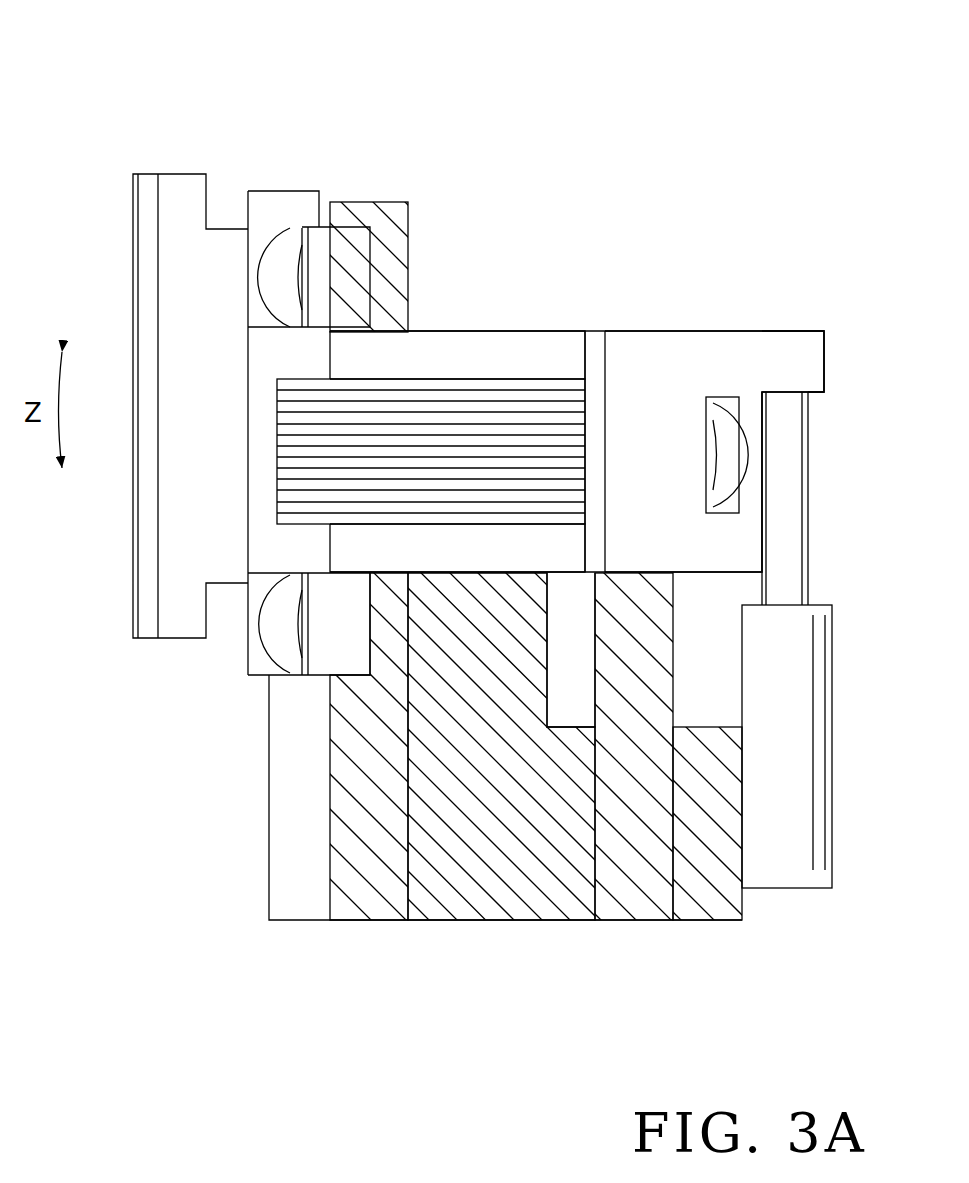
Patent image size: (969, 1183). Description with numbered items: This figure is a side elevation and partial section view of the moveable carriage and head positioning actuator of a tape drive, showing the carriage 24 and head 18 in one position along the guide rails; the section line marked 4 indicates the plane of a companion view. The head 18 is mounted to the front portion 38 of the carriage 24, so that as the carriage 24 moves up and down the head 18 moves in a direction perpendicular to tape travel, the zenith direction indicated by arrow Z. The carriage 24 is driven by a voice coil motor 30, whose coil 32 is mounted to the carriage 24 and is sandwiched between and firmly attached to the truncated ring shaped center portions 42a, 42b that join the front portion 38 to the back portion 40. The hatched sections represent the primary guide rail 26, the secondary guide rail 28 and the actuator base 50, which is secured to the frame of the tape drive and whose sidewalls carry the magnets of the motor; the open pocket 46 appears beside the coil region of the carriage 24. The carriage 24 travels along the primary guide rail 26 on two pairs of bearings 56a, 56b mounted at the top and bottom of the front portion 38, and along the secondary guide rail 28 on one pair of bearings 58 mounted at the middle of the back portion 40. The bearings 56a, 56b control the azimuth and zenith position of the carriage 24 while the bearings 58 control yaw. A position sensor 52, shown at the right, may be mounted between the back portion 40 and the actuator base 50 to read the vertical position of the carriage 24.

The section line 4- 4 is at (246, 80).
The head 18 is at (133, 258).
The moveable carriage 24 is at (677, 327).
The primary guide rail 26 is at (385, 203).
The secondary guide rail 28 is at (650, 918).
The voice coil motor 30 is at (566, 288).
The coil 32 is at (575, 422).
The front portion 38 is at (263, 197).
The back portion 40 is at (810, 338).
The center portion 42a is at (492, 343).
The center portion 42b is at (558, 548).
The gap 46 is at (527, 650).
The actuator base 50 is at (500, 905).
The position sensor 52 is at (795, 900).
The bearings 56a is at (288, 233).
The bearings 56b is at (268, 645).
The bearings 58 is at (722, 420).